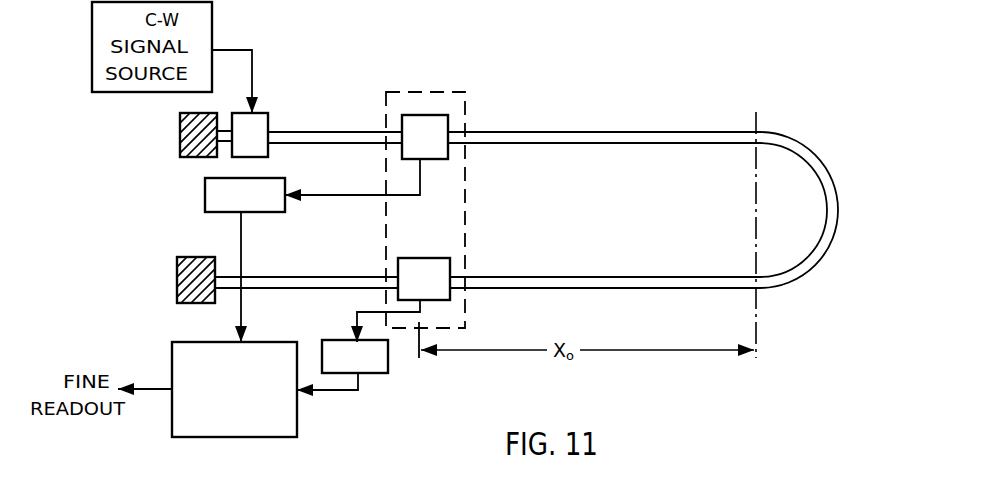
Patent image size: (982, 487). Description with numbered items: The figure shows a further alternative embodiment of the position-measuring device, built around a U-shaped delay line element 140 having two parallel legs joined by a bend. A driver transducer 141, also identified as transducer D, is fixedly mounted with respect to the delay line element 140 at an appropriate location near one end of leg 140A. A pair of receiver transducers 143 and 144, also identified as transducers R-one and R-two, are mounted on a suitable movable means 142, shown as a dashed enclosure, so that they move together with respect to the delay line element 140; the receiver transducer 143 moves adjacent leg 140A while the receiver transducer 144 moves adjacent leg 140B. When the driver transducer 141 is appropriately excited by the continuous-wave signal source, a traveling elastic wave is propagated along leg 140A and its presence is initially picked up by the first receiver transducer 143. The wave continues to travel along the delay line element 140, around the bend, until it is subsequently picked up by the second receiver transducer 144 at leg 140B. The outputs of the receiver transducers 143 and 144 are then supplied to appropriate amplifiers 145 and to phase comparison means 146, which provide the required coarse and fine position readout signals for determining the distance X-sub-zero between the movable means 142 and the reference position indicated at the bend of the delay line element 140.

The U-shaped delay line element 140 is at (802, 148).
The leg of delay line element 140A is at (548, 145).
The leg of delay line element 140B is at (557, 277).
The driver transducer 141 is at (270, 116).
The movable means 142 is at (417, 92).
The receiver transducer 143 is at (448, 118).
The receiver transducer 144 is at (450, 262).
The amplifiers 145 is at (205, 196).
The phase comparison means 146 is at (297, 432).